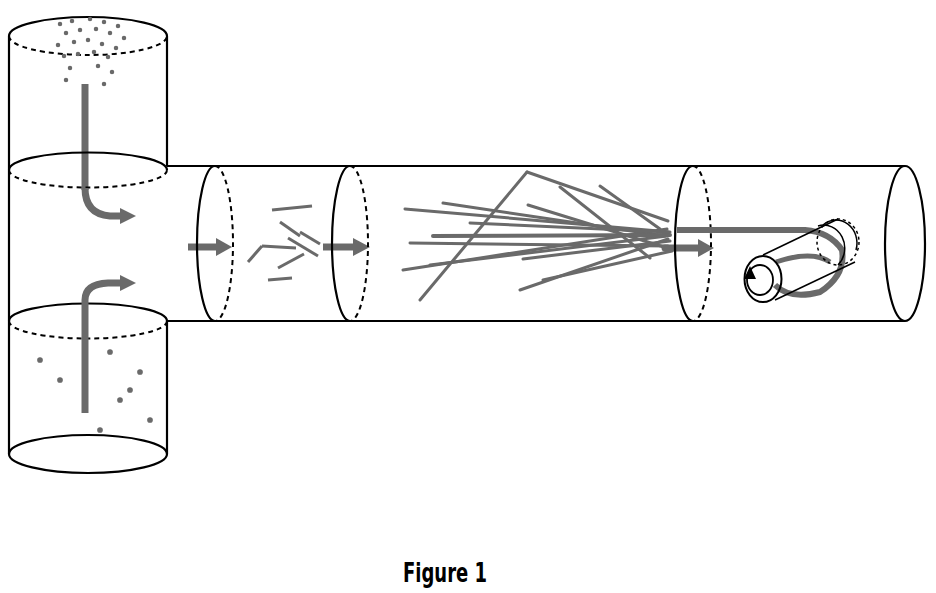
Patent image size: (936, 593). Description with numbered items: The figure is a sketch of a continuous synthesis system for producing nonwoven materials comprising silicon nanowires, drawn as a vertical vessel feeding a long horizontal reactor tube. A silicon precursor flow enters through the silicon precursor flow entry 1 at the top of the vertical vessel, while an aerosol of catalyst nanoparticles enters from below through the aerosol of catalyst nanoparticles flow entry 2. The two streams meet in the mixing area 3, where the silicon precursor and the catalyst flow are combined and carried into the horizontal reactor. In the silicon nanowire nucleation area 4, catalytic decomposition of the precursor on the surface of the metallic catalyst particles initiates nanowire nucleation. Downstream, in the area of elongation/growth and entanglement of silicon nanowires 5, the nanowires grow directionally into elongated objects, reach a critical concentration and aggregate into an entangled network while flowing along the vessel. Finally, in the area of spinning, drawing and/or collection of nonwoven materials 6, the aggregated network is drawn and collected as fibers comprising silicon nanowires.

The silicon precursor flow entry 1 is at (88, 103).
The aerosol of catalyst nanoparticles flow entry 2 is at (88, 386).
The mixing area 3 is at (120, 246).
The silicon nanowire nucleation area 4 is at (283, 243).
The area of elongation/growth and entanglement of silicon nanowires 5 is at (523, 243).
The area of spinning, drawing and/or collection of nonwoven materials 6 is at (767, 243).